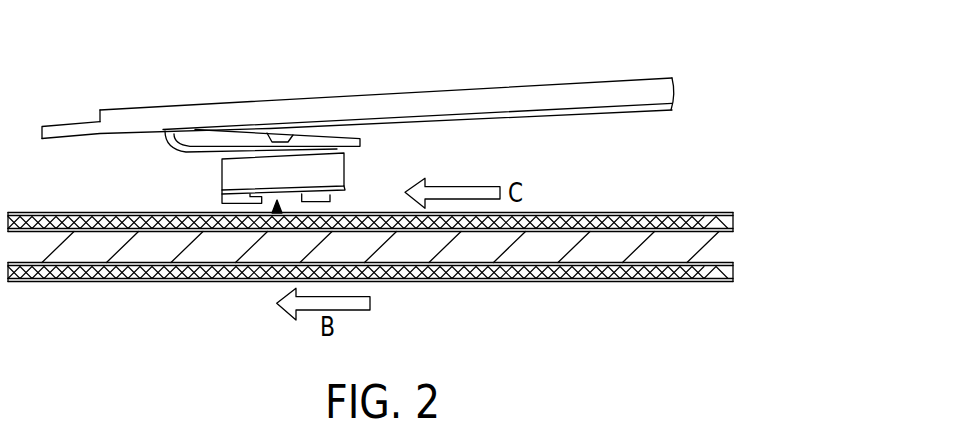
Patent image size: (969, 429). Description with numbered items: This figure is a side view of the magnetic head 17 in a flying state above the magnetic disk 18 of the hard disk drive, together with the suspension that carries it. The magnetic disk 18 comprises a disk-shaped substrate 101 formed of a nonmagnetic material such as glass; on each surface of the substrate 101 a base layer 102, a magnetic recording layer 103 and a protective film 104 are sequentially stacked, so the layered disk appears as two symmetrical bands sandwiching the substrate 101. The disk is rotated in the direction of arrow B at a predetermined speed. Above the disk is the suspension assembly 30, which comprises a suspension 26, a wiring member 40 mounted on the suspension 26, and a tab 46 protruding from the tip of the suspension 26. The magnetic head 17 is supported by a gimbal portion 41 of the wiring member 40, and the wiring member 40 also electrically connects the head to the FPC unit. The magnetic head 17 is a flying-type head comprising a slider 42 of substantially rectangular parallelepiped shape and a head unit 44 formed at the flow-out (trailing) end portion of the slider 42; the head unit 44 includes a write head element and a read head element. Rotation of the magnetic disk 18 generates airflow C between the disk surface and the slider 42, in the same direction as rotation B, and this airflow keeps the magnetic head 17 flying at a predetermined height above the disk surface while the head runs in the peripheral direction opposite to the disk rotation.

The magnetic head 17 is at (277, 213).
The magnetic disk 18 is at (412, 236).
The suspension 26 is at (546, 97).
The suspension assembly 30 is at (358, 84).
The wiring member 40 is at (616, 114).
The gimbal portion 41 is at (350, 138).
The slider 42 is at (253, 163).
The head unit 44 is at (239, 193).
The tab 46 is at (59, 131).
The substrate 101 is at (613, 252).
The base layer 102 is at (412, 252).
The magnetic recording layer 103 is at (654, 212).
The protective film 104 is at (733, 212).